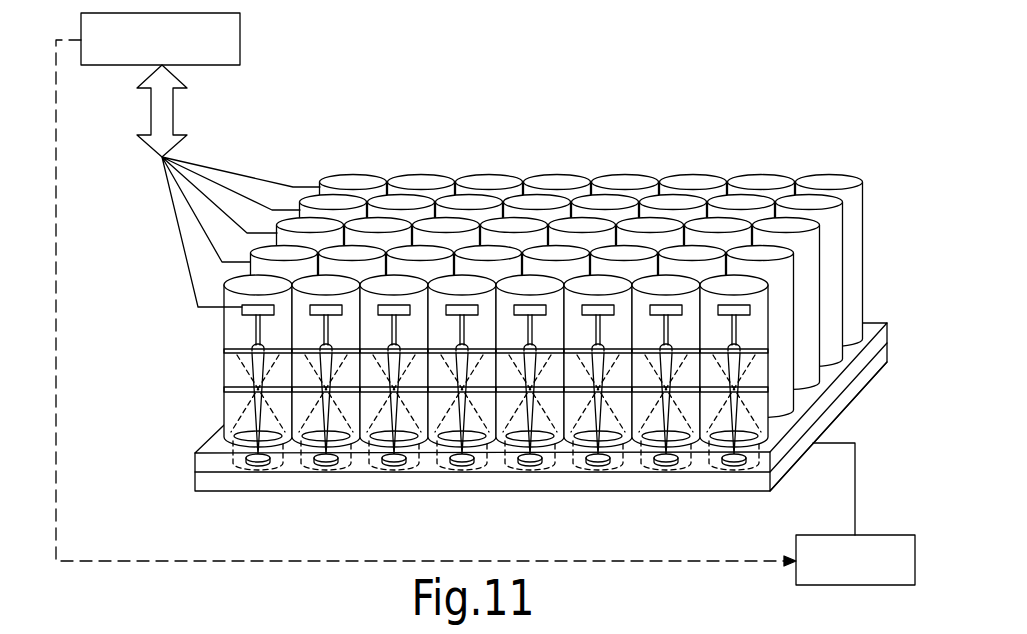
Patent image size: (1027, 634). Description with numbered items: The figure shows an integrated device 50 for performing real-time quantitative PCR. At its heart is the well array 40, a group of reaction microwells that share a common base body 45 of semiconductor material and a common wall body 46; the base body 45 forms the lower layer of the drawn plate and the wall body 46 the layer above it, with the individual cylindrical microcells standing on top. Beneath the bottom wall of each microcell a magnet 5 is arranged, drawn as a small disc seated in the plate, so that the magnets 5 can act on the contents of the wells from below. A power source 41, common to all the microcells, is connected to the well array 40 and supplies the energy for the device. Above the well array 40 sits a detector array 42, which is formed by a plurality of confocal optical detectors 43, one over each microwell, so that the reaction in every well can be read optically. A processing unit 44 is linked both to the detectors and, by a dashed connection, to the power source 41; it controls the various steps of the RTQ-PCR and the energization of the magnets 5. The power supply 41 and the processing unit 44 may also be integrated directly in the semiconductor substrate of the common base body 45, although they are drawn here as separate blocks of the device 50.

The magnet 5 is at (460, 462).
The well array 40 is at (529, 405).
The power source 41 is at (898, 540).
The detector array 42 is at (583, 267).
The confocal optical detector 43 is at (388, 202).
The processing unit 44 is at (210, 60).
The common base body 45 is at (870, 368).
The common wall body 46 is at (872, 350).
The integrated device 50 is at (834, 143).